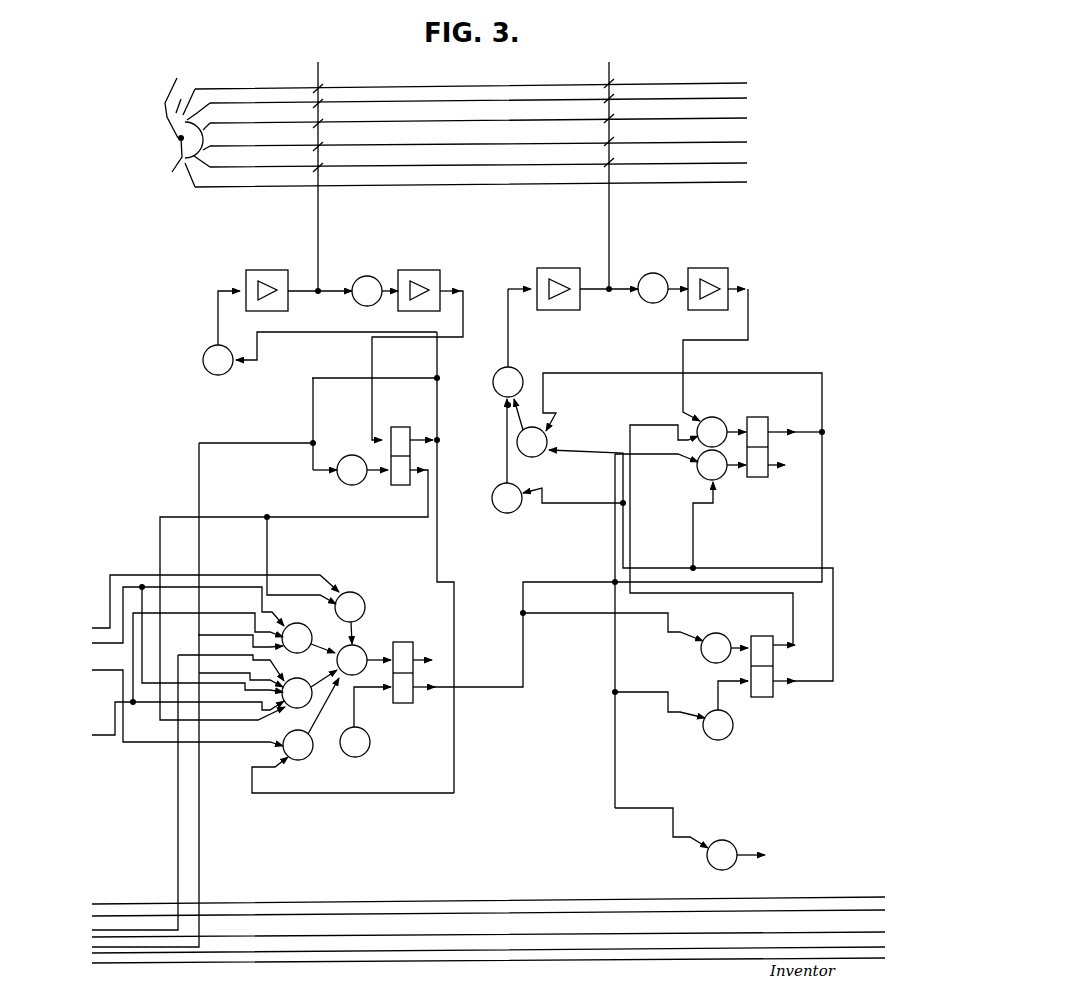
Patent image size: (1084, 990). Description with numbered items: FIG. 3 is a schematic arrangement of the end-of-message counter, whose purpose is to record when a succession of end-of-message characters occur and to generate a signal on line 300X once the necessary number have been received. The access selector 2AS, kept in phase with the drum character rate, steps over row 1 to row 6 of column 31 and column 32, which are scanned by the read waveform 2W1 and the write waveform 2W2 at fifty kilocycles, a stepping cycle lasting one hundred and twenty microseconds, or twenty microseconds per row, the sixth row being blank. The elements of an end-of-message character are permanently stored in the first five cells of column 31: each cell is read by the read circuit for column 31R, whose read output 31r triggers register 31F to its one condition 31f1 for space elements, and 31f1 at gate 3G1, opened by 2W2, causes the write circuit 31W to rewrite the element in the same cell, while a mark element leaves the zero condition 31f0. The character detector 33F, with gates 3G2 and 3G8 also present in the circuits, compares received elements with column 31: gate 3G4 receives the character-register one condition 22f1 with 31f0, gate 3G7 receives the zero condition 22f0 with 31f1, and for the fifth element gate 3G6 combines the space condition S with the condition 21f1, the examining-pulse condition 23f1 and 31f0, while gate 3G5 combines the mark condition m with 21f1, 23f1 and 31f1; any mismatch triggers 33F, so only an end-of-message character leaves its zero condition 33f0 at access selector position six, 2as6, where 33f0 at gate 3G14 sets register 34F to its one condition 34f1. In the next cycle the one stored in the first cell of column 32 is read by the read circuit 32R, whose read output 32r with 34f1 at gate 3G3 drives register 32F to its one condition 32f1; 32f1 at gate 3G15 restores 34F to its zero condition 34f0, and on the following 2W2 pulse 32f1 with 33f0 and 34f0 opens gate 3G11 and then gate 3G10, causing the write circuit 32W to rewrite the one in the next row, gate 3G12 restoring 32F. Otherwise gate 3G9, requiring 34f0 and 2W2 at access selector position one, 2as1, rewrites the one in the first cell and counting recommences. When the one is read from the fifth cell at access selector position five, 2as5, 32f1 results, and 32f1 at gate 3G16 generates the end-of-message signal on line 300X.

The access selector 2AS is at (456, 123).
The row 1 is at (178, 106).
The row 6 is at (170, 174).
The column 31 is at (313, 171).
The column 32 is at (605, 169).
The write circuit for column 31 31W is at (299, 278).
The read circuit for column 31 31R is at (417, 343).
The write circuit for column 32 32W is at (573, 277).
The read circuit for column 32 32R is at (716, 277).
The read waveform 2W1 is at (367, 276).
The write waveform 2W2 is at (231, 370).
The gate 3G1 is at (214, 345).
The gate 3G2 is at (362, 481).
The gate 3G3 is at (541, 536).
The gate 3G4 is at (366, 610).
The gate 3G5 is at (308, 628).
The gate 3G6 is at (309, 684).
The gate 3G7 is at (309, 731).
The gate 3G8 is at (364, 731).
The gate 3G9 is at (486, 456).
The gate 3G10 is at (307, 618).
The gate 3G11 is at (536, 437).
The gate 3G12 is at (730, 477).
The gate 3G14 is at (718, 639).
The gate 3G15 is at (743, 711).
The gate 3G16 is at (732, 843).
The register 31F is at (407, 443).
The register 32F is at (783, 436).
The character detector 33F is at (414, 657).
The register 34F is at (768, 655).
The read output of 31R 31r is at (354, 441).
The read output of 32R 32r is at (698, 355).
The 31/1 condition 31f1 is at (326, 562).
The 31/0 condition 31f0 is at (294, 604).
The 32/1 condition 32f1 is at (682, 610).
The 33/0 condition 33f0 is at (549, 437).
The 34/1 condition 34f1 is at (712, 535).
The 34/0 condition 34f0 is at (678, 565).
The 21/1 condition 21f1 is at (188, 643).
The 22/1 condition 22f1 is at (215, 590).
The 22/0 condition 22f0 is at (187, 715).
The 23/1 condition 23f1 is at (188, 674).
The access selector position 1 2as1 is at (507, 515).
The access selector position 5 2as5 is at (707, 862).
The access selector position 6 2as6 is at (372, 738).
The mark condition m is at (188, 791).
The space condition S is at (241, 678).
The line 300X is at (765, 866).